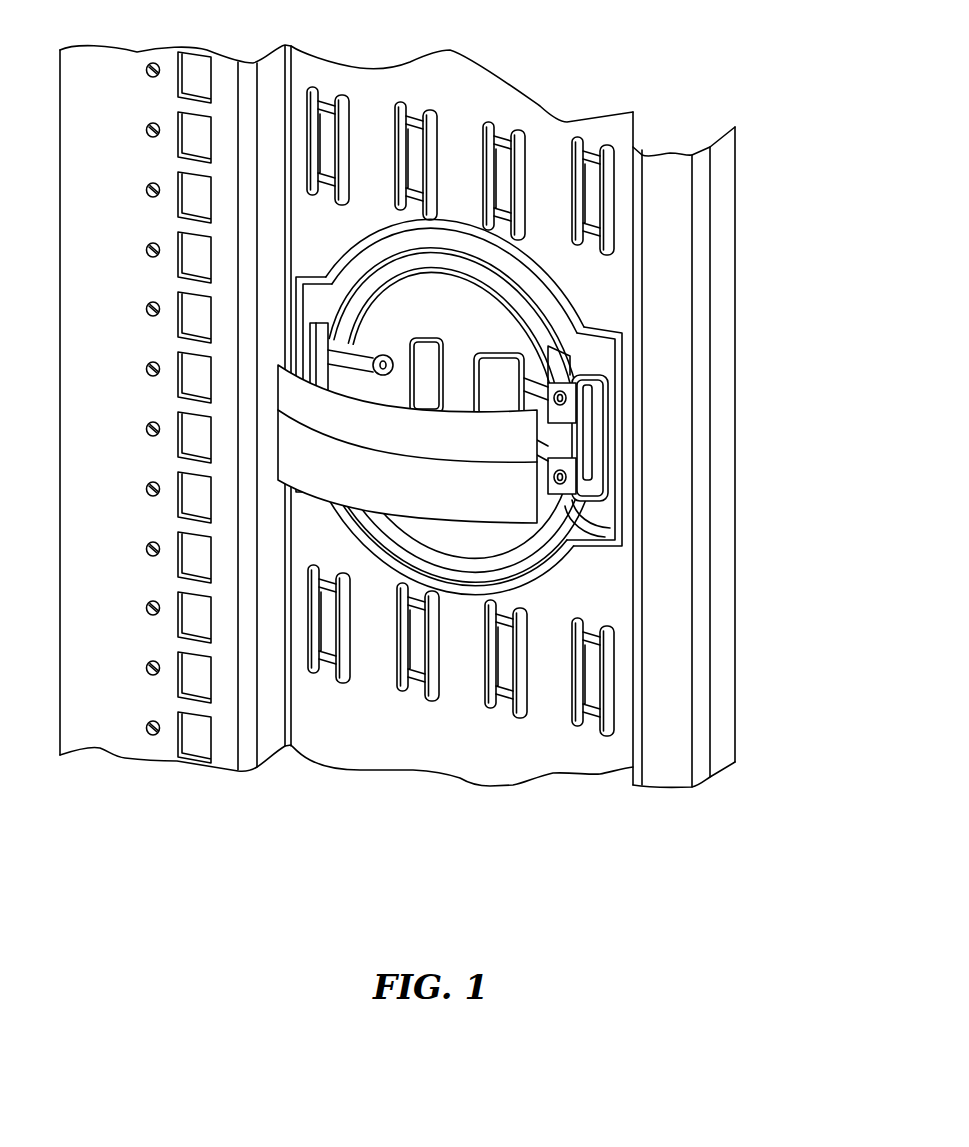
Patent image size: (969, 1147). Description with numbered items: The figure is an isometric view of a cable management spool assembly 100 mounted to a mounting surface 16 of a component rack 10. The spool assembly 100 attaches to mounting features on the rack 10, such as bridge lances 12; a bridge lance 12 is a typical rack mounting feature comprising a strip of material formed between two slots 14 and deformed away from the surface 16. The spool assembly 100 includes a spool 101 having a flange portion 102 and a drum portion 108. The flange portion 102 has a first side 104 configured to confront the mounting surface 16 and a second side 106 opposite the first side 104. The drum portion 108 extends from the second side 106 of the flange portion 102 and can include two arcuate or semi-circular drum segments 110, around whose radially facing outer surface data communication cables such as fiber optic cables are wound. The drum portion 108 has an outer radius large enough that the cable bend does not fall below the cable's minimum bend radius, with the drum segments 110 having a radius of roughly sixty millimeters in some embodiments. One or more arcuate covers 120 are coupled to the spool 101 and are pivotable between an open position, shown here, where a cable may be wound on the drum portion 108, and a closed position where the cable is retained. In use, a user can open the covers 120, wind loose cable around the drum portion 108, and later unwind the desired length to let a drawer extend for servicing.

The component rack 10 is at (398, 396).
The bridge lance 12 is at (410, 143).
The slots 14 is at (428, 137).
The mounting surface 16 is at (467, 110).
The cable management spool assembly 100 is at (578, 448).
The spool 101 is at (565, 268).
The flange portion 102 is at (613, 527).
The first side 104 is at (557, 557).
The second side 106 is at (570, 578).
The drum portion 108 is at (585, 365).
The drum segments 110 is at (552, 350).
The arcuate covers 120 is at (487, 490).